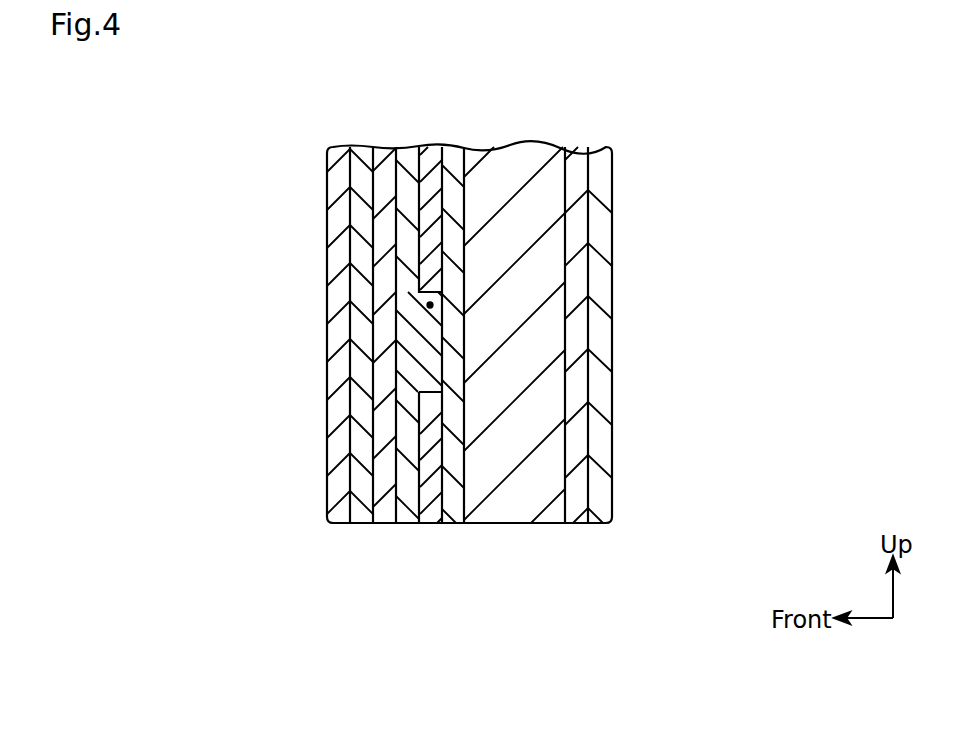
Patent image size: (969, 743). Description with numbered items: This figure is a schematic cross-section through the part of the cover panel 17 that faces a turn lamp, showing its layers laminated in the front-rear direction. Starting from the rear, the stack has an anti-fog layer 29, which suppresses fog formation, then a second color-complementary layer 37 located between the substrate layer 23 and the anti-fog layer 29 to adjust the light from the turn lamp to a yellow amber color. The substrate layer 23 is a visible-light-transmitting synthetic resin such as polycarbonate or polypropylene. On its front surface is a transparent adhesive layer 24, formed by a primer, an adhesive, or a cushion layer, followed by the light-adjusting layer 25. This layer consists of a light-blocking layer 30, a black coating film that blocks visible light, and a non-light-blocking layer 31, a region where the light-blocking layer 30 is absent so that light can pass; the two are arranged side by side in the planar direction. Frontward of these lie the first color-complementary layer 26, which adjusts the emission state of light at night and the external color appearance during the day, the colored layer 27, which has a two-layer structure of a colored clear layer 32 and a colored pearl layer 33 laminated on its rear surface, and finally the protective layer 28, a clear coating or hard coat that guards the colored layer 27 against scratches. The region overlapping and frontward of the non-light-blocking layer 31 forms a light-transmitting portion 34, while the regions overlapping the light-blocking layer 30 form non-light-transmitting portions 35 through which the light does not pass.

The cover panel 17 is at (708, 133).
The substrate layer 23 is at (512, 527).
The adhesive layer 24 is at (447, 527).
The light-adjusting layer 25 is at (433, 541).
The first color-complementary layer 26 is at (408, 527).
The colored layer 27 is at (402, 608).
The protective layer 28 is at (340, 527).
The anti-fog layer 29 is at (602, 527).
The light-blocking layer 30 is at (432, 152).
The non-light-blocking layer 31 is at (432, 305).
The colored clear layer 32 is at (357, 527).
The colored pearl layer 33 is at (382, 527).
The light-transmitting portion 34 is at (327, 292).
The non-light-transmitting portion 35 is at (327, 148).
The second color-complementary layer 37 is at (575, 527).